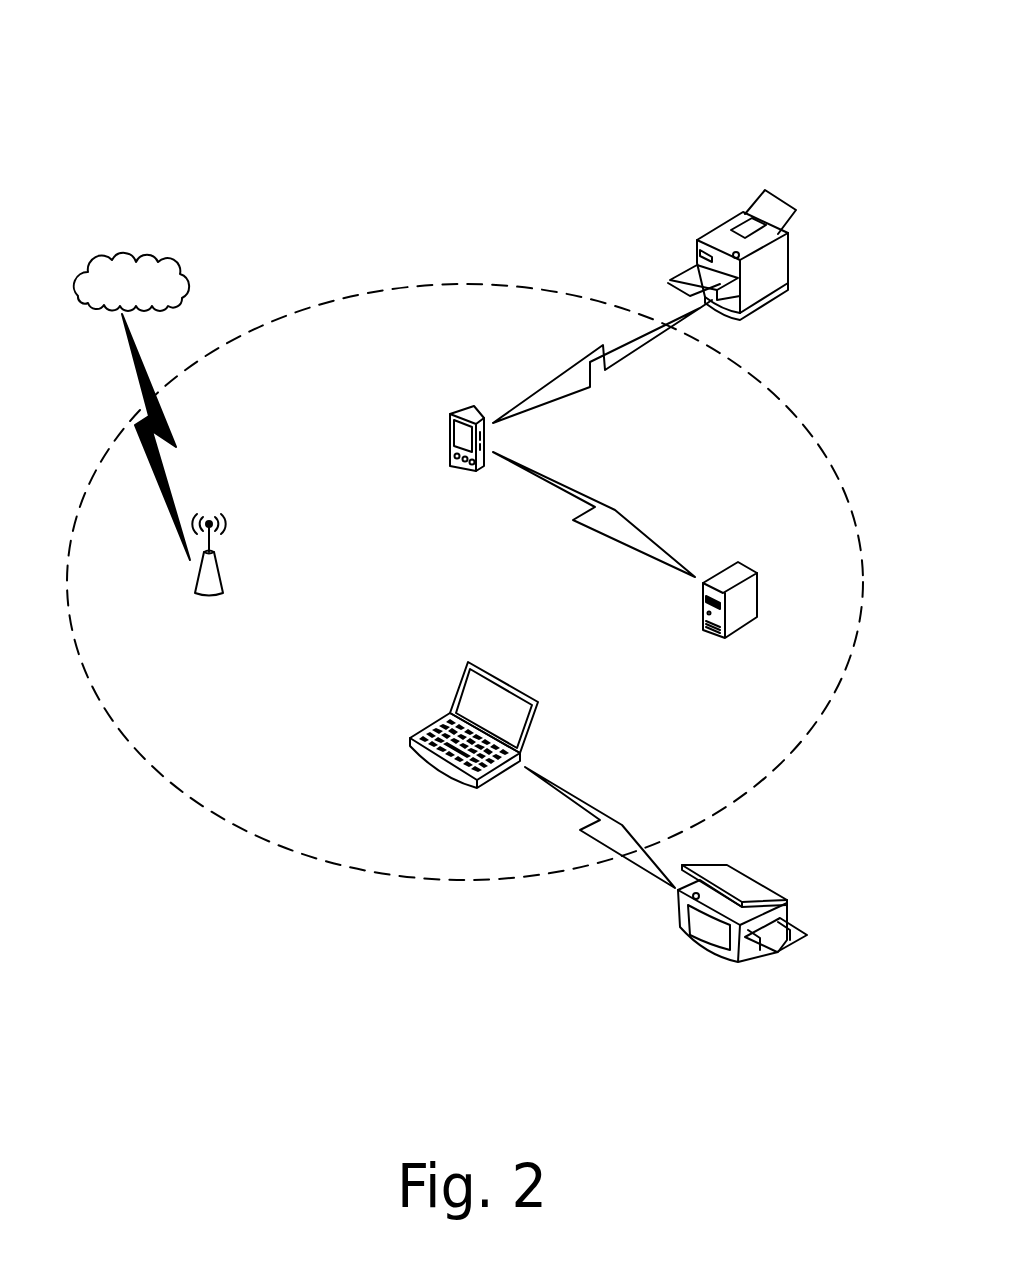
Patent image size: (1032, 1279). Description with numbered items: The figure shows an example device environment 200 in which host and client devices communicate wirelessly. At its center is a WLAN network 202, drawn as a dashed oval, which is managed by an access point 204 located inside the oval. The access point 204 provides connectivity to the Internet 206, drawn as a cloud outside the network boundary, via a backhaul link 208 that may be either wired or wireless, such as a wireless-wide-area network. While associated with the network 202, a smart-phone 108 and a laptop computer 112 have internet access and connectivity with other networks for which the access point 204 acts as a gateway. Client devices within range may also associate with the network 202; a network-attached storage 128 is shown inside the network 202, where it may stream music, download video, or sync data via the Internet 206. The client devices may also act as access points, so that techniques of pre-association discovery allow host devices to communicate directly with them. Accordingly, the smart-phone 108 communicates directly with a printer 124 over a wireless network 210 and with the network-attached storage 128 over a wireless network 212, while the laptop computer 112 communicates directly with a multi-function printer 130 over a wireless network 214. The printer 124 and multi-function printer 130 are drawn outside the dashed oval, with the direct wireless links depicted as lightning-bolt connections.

The device environment 200 is at (811, 70).
The WLAN network 202 is at (452, 283).
The access point 204 is at (221, 562).
The Internet 206 is at (120, 262).
The backhaul link 208 is at (133, 352).
The smart-phone 108 is at (452, 408).
The laptop computer 112 is at (518, 683).
The printer 124 is at (790, 243).
The network-attached storage 128 is at (757, 575).
The multi-function printer 130 is at (782, 895).
The wireless network 210 is at (636, 346).
The wireless network 212 is at (634, 545).
The wireless network 214 is at (569, 795).